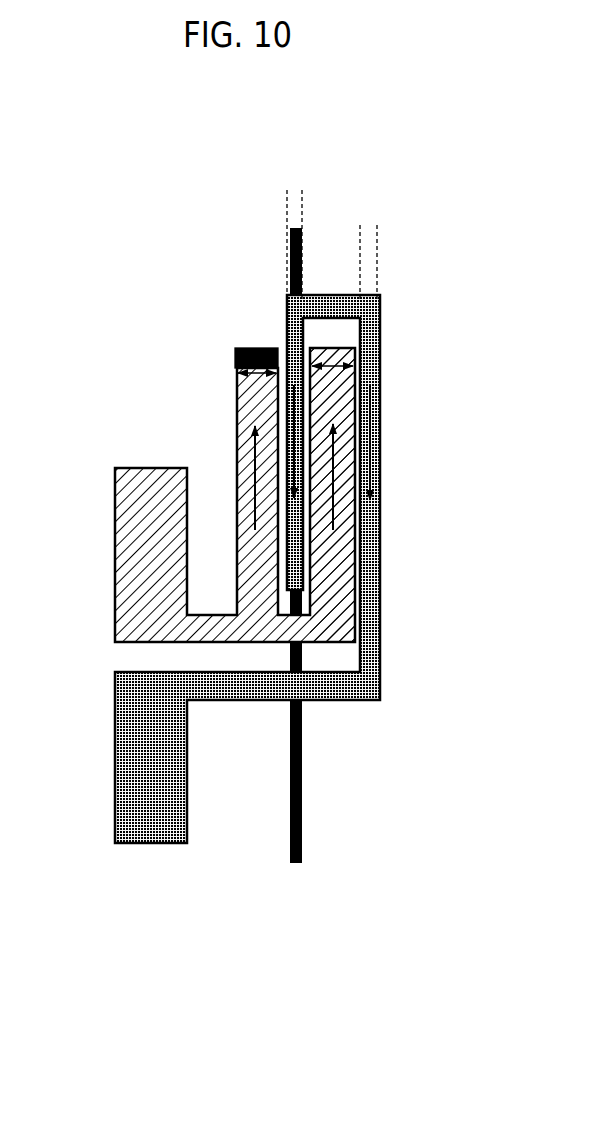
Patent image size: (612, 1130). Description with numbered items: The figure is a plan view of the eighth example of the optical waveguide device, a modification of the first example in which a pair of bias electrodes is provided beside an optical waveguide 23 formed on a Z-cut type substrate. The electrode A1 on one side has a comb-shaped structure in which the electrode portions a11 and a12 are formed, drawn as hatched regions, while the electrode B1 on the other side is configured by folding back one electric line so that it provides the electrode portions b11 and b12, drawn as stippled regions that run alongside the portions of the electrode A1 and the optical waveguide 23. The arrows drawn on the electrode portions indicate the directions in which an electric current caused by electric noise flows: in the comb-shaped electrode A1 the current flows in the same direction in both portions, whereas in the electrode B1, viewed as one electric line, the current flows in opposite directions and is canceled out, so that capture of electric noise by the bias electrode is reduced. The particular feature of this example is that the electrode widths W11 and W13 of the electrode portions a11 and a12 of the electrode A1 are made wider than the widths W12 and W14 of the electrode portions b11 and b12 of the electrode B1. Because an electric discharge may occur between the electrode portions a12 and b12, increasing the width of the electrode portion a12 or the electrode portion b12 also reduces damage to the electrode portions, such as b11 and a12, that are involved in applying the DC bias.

The electrode A1 is at (249, 494).
The electrode B1 is at (118, 855).
The electrode portion a11 is at (253, 348).
The electrode portion a12 is at (336, 584).
The electrode portion b11 is at (292, 333).
The electrode portion b12 is at (372, 353).
The optical waveguide 23 is at (301, 842).
The electrode width W11 is at (236, 388).
The width W12 is at (326, 216).
The electrode width W13 is at (353, 386).
The width W14 is at (335, 254).